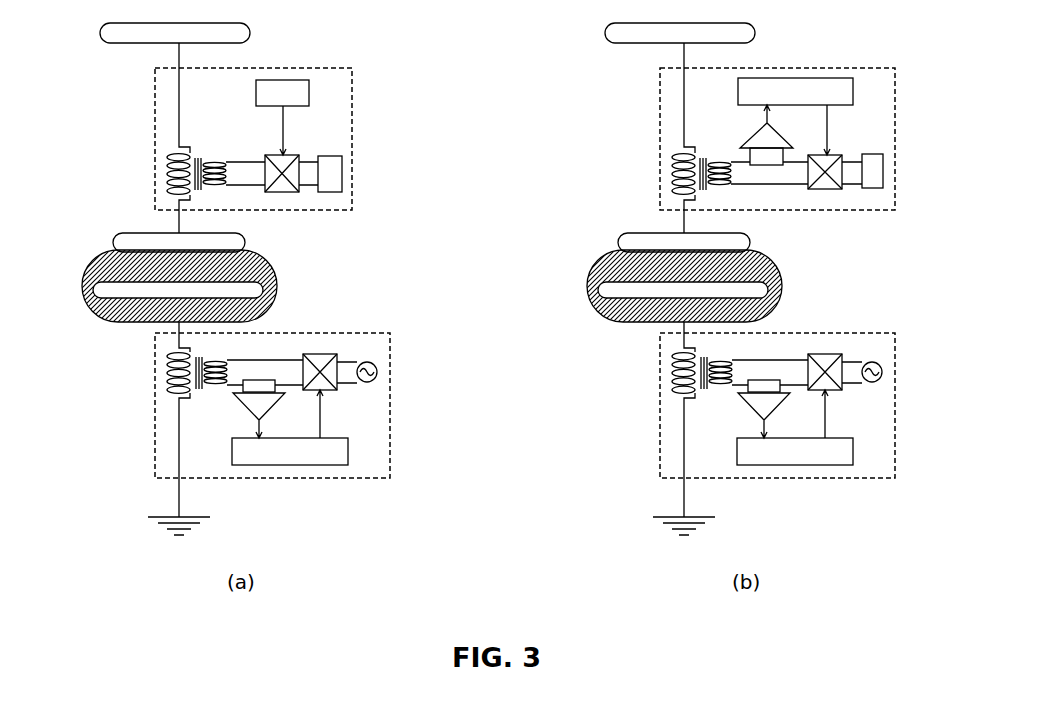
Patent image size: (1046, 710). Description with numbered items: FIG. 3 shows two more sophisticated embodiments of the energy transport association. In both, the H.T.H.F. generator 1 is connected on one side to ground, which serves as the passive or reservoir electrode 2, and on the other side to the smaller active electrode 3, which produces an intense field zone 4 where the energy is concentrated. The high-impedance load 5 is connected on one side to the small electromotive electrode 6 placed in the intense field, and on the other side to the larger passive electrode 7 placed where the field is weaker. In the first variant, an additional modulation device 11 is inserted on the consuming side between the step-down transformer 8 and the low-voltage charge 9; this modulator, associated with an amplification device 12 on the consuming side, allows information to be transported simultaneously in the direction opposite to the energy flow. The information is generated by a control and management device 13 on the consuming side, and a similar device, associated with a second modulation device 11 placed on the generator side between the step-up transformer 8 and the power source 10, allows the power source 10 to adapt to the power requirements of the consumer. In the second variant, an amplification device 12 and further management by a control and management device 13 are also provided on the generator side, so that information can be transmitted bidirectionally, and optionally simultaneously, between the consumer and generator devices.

The H.T.H.F. generator 1 is at (153, 428).
The passive electrode 2 is at (157, 515).
The active electrode 3 is at (103, 292).
The intense field zone 4 is at (112, 262).
The high-impedance load 5 is at (167, 110).
The electromotive electrode 6 is at (155, 243).
The passive electrode 7 is at (112, 35).
The transformer 8 is at (168, 175).
The low-voltage charge 9 is at (332, 172).
The power source 10 is at (378, 373).
The modulation device 11 is at (285, 183).
The amplification device 12 is at (262, 400).
The control and management device 13 is at (285, 88).